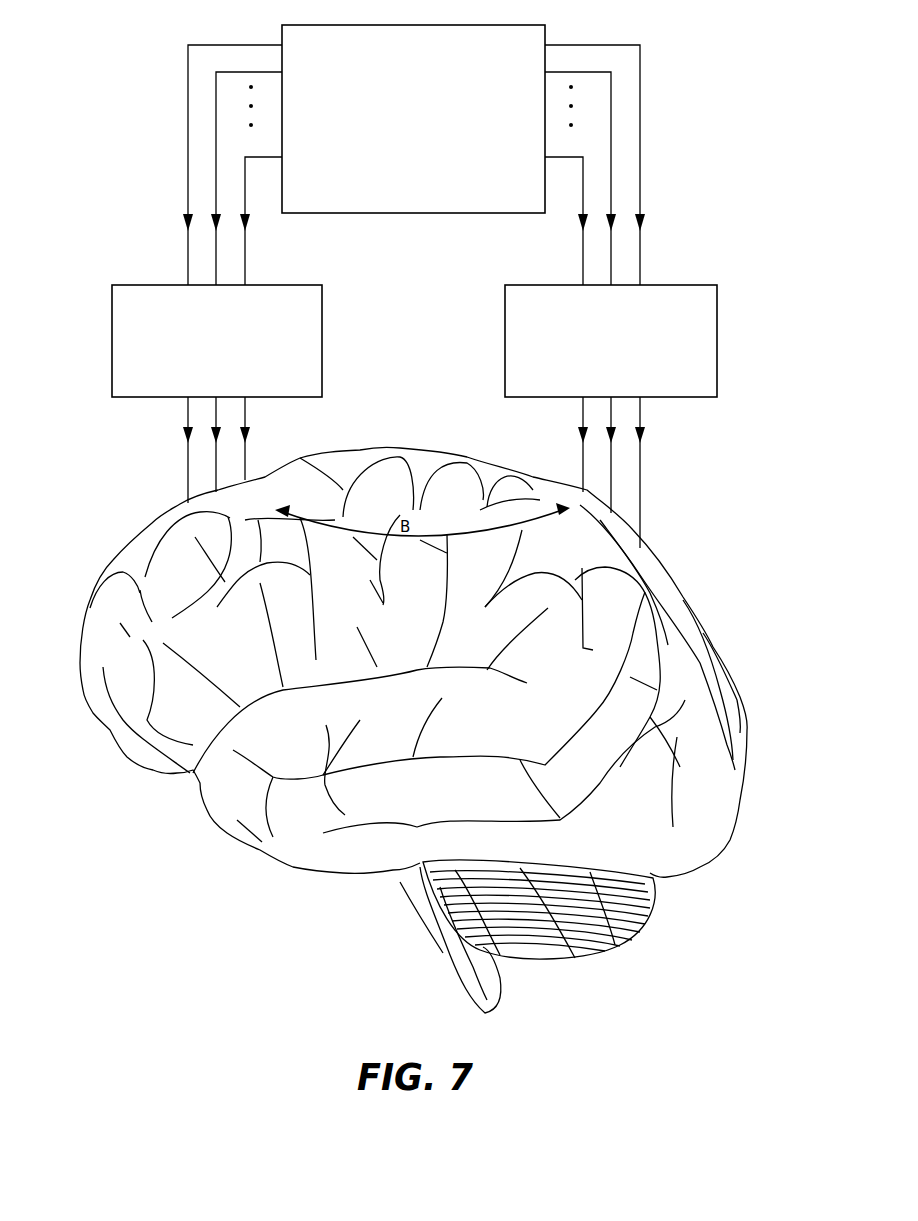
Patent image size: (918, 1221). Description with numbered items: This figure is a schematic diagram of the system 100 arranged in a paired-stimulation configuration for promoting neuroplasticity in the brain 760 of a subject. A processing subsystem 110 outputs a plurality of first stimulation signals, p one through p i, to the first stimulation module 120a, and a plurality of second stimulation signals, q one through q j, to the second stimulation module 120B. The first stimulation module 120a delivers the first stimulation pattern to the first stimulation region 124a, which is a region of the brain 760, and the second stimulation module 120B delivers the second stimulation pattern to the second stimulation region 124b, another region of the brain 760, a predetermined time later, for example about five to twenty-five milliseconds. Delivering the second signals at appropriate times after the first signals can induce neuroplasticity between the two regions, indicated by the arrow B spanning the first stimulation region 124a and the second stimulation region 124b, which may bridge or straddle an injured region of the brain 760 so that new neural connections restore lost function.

The system 100 is at (152, 100).
The processing subsystem 110 is at (413, 119).
The first stimulation module 120a is at (217, 341).
The second stimulation module 120B is at (611, 341).
The first stimulation region 124a is at (183, 503).
The second stimulation region 124b is at (605, 529).
The brain 760 is at (293, 873).